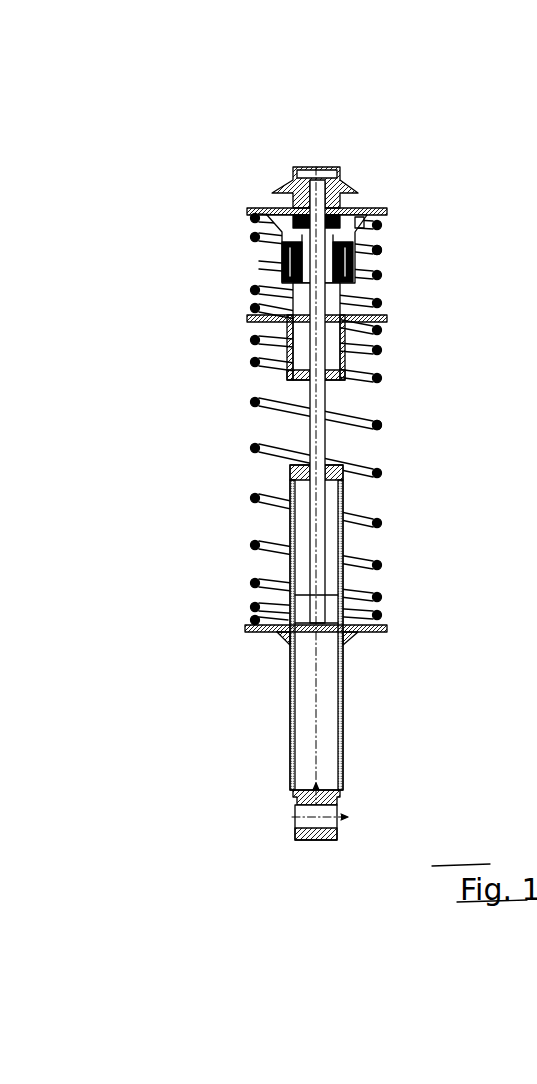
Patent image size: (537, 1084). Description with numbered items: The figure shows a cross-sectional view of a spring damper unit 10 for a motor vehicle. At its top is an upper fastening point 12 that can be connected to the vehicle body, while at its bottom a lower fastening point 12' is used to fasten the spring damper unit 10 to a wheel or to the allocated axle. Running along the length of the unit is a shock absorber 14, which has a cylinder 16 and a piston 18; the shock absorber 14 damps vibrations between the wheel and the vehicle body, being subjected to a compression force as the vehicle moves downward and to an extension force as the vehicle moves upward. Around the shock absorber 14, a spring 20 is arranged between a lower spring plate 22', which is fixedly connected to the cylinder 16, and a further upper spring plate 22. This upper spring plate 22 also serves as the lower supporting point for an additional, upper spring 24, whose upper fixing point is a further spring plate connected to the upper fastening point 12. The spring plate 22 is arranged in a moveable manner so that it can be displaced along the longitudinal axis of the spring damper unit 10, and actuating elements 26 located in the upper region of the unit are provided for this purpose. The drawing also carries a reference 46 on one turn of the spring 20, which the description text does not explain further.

The spring damper unit 10 is at (312, 487).
The upper fastening point 12 is at (283, 153).
The lower fastening point 12' is at (281, 847).
The shock absorber 14 is at (343, 539).
The cylinder 16 is at (343, 760).
The piston 18 is at (308, 625).
The spring 20 is at (383, 522).
The upper spring plate 22 is at (351, 331).
The lower spring plate 22' is at (348, 638).
The upper spring 24 is at (383, 250).
The actuating elements 26 is at (264, 258).
The spring turn 46 is at (378, 430).